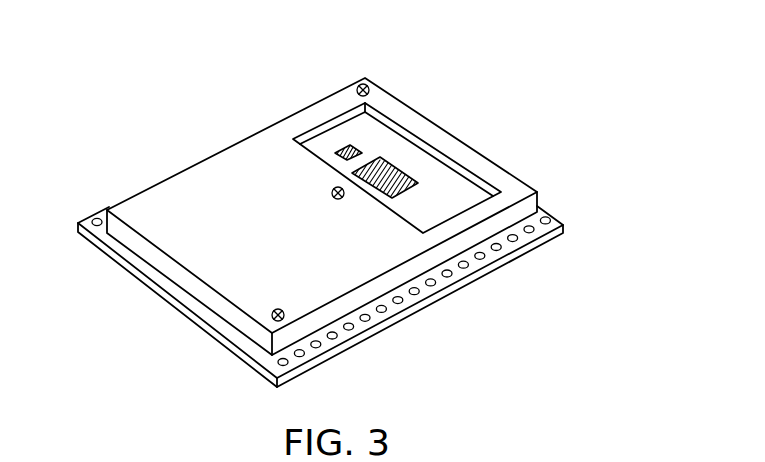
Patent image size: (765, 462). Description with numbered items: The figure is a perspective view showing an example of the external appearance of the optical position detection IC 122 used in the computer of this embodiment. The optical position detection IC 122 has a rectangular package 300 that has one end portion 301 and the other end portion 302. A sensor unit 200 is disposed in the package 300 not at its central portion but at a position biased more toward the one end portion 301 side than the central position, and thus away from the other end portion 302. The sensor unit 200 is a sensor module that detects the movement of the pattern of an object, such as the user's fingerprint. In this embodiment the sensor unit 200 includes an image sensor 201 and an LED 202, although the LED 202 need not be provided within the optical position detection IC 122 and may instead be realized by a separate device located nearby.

The optical position detection IC 122 is at (409, 87).
The sensor unit 200 is at (410, 154).
The image sensor 201 is at (403, 170).
The LED 202 is at (348, 146).
The rectangular package 300 is at (208, 178).
The one end portion 301 is at (443, 122).
The other end portion 302 is at (183, 271).